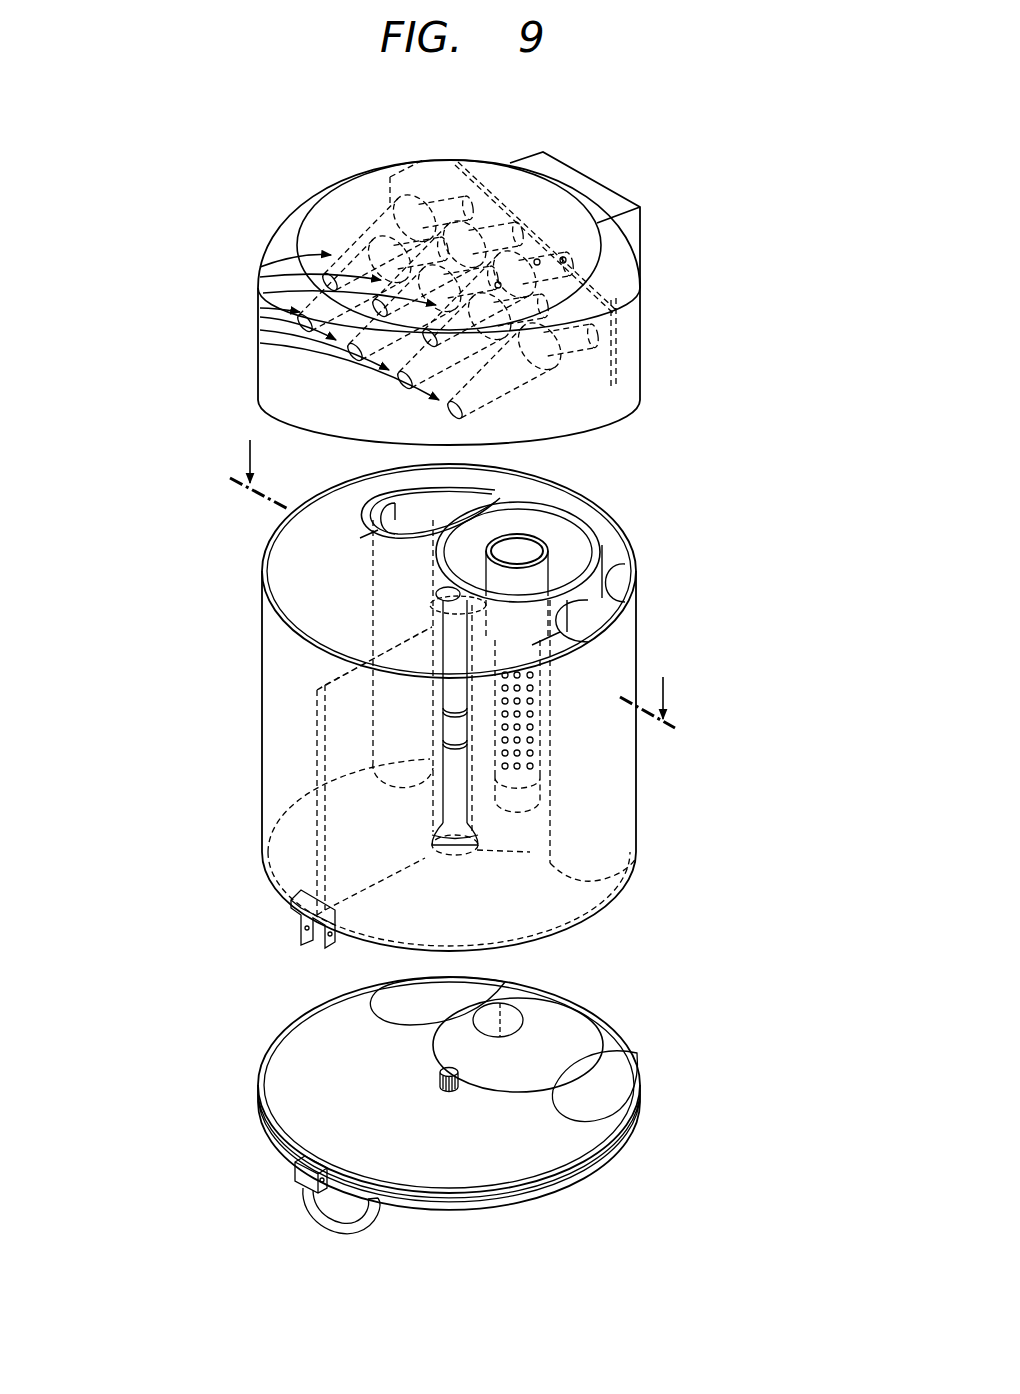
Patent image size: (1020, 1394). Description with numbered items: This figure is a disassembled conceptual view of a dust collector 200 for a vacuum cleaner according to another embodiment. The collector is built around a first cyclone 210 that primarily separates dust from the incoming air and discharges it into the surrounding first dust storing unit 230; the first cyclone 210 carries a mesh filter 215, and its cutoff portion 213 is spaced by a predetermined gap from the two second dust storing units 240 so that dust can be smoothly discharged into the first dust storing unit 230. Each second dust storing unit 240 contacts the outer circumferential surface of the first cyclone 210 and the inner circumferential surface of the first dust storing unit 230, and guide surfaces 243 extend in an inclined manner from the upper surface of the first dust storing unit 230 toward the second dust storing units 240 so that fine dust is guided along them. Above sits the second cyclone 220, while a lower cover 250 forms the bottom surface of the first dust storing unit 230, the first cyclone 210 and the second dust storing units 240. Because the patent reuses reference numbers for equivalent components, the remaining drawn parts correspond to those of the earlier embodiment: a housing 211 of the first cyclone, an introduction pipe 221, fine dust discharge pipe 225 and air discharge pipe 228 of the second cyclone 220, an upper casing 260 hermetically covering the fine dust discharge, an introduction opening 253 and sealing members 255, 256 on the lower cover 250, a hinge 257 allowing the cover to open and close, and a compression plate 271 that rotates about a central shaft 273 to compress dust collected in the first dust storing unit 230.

The dust collector 200 is at (155, 422).
The first cyclone 210 is at (728, 738).
The filter body 211 is at (527, 852).
The cutoff portion 213 is at (497, 632).
The mesh filter 215 is at (540, 752).
The second cyclone 220 is at (455, 410).
The nozzle body 221 is at (537, 260).
The nozzle outlet 225 is at (498, 283).
The nozzle connecting portion 228 is at (563, 258).
The first dust storing unit 230 is at (262, 700).
The second dust storing units 240 is at (612, 548).
The guide surfaces 243 is at (368, 513).
The lower cover 250 is at (295, 1067).
The opening 253 is at (502, 1032).
The raised portion 255 is at (595, 1022).
The recess 256 is at (505, 982).
The handle 257 is at (300, 1170).
The nozzle cap 260 is at (277, 217).
The baffle 271 is at (317, 748).
The shaft 273 is at (448, 797).